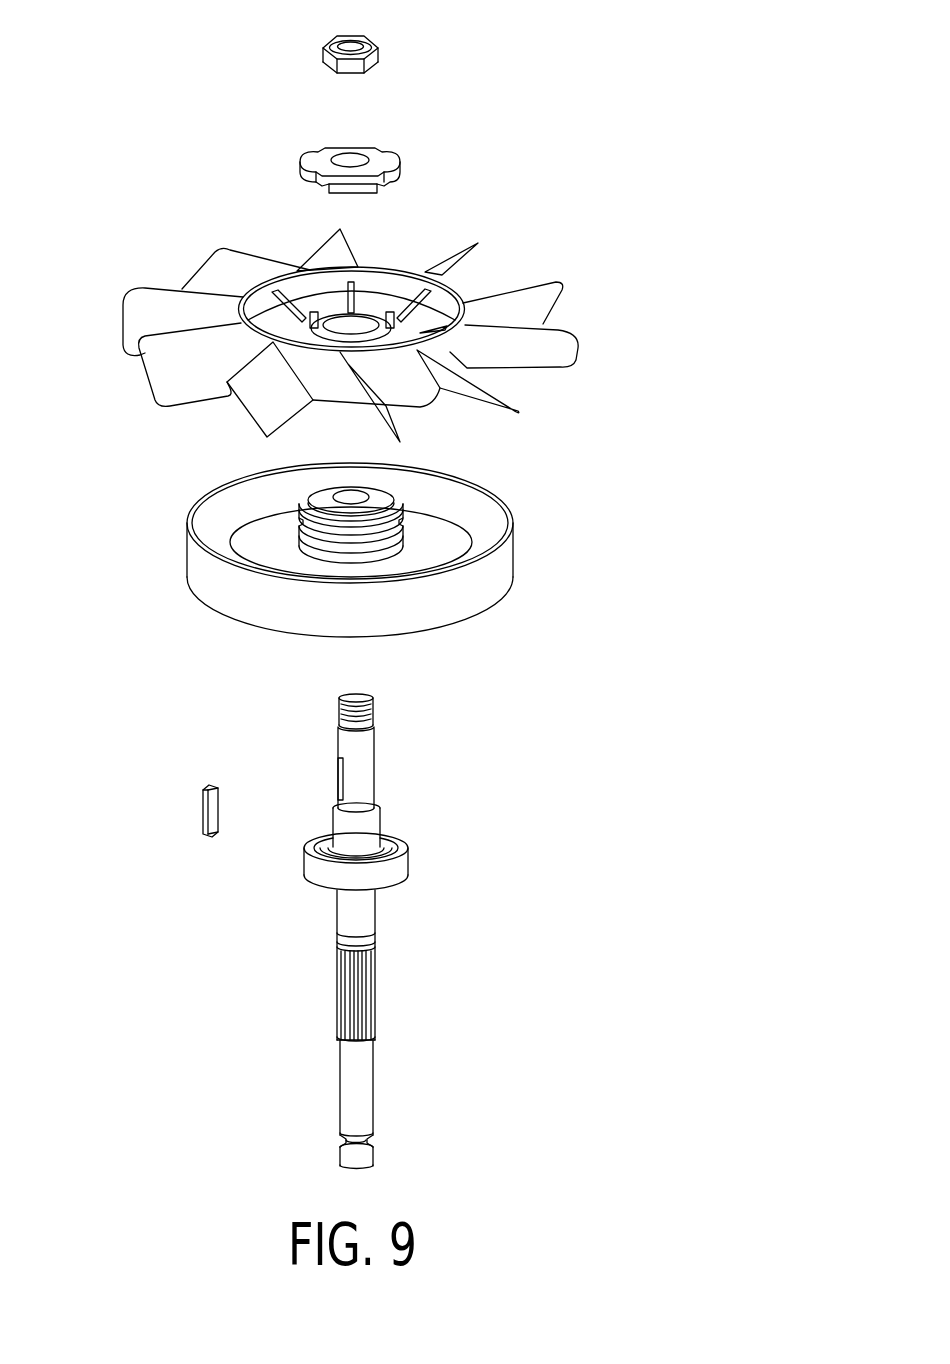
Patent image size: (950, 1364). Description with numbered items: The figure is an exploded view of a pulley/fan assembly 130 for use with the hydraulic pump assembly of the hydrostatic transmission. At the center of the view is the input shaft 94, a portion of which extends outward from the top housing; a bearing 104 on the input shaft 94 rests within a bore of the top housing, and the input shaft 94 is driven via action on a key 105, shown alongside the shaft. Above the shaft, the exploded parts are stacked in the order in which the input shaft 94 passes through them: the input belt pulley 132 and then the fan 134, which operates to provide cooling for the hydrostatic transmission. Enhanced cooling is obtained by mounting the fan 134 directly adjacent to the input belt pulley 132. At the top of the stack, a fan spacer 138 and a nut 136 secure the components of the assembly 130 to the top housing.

The pulley/fan assembly 130 is at (162, 220).
The nut 136 is at (378, 52).
The fan spacer 138 is at (400, 165).
The fan 134 is at (560, 290).
The input belt pulley 132 is at (516, 532).
The key 105 is at (203, 829).
The input shaft 94 is at (336, 912).
The bearing 104 is at (403, 867).